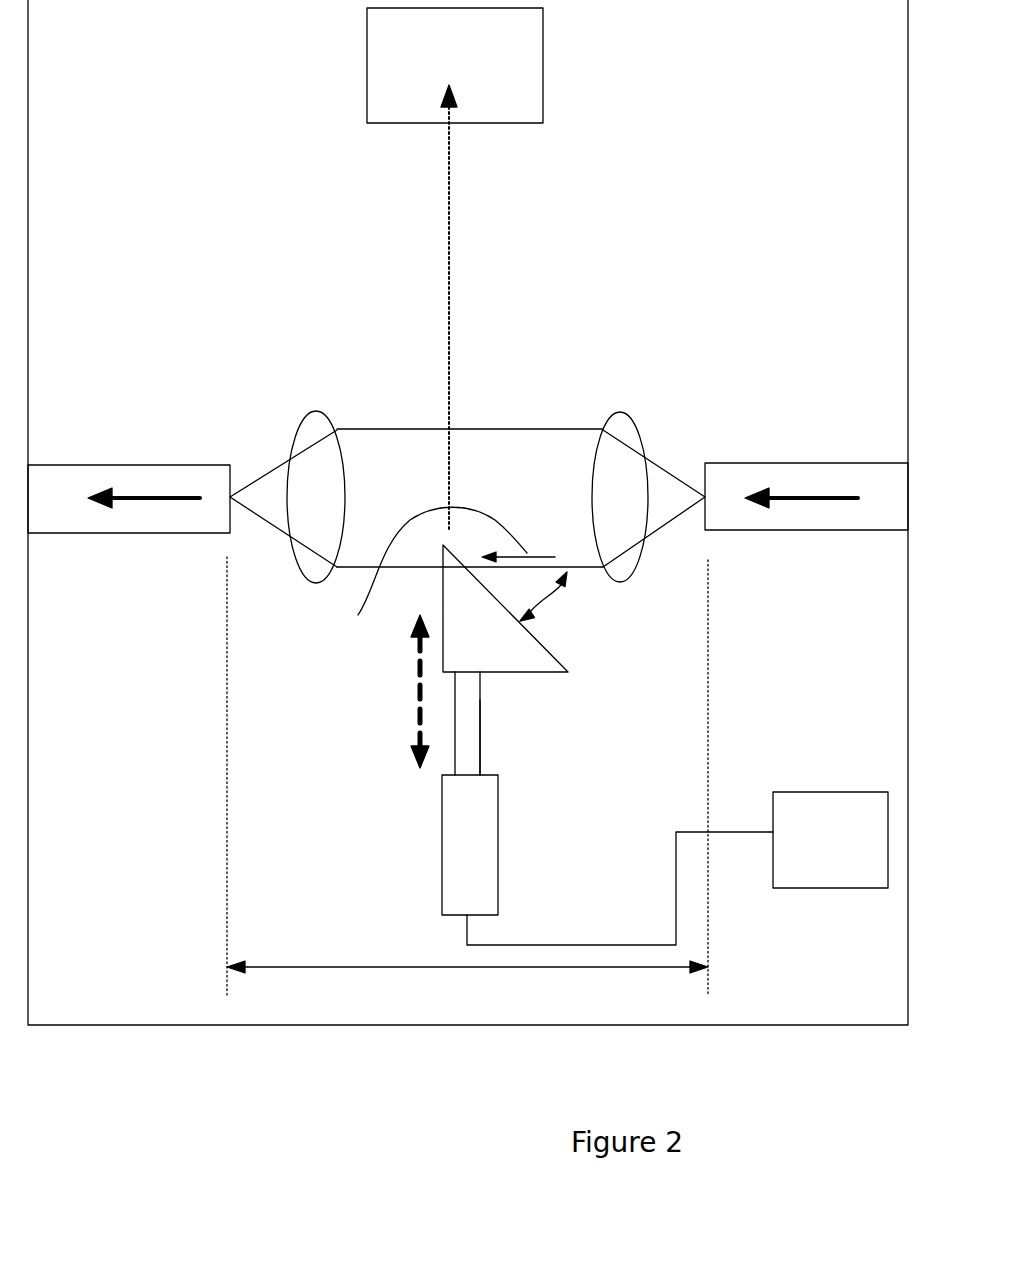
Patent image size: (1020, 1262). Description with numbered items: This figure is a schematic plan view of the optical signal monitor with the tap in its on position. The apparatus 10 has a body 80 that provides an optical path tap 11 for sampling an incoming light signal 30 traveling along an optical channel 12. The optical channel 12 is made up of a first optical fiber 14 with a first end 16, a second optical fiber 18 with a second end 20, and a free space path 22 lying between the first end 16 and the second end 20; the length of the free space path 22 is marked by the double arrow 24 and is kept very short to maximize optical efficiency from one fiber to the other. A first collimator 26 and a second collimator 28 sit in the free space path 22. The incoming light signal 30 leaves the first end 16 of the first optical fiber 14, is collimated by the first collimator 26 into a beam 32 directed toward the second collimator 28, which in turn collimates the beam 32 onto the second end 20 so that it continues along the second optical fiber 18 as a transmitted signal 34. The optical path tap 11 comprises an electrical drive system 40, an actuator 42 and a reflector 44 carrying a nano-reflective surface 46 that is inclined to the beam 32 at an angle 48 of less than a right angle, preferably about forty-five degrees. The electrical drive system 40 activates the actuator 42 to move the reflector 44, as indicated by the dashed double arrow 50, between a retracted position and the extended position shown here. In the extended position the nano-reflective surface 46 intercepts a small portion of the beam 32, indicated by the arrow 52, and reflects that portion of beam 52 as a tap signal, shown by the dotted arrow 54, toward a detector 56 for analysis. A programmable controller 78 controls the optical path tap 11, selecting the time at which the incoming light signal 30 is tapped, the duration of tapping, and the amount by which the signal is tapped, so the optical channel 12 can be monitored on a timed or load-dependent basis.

The apparatus 10 is at (212, 172).
The optical path tap 11 is at (342, 820).
The optical channel 12 is at (160, 323).
The first optical fiber 14 is at (800, 478).
The first end 16 is at (705, 470).
The second optical fiber 18 is at (122, 480).
The second end 20 is at (232, 465).
The free space path 22 is at (520, 378).
The length of free space path 24 is at (305, 967).
The first collimator 26 is at (619, 428).
The second collimator 28 is at (318, 430).
The incoming light signal 30 is at (800, 497).
The beam 32 is at (405, 455).
The transmitted signal 34 is at (148, 500).
The electrical drive system 40 is at (468, 852).
The actuator 42 is at (468, 722).
The reflector 44 is at (493, 648).
The nano-reflective surface 46 is at (545, 648).
The angle 48 is at (557, 607).
The dashed double arrow 50 is at (413, 655).
The portion of beam 52 is at (358, 615).
The tap signal 54 is at (455, 215).
The detector 56 is at (493, 60).
The programmable controller 78 is at (810, 830).
The body 80 is at (410, 1027).